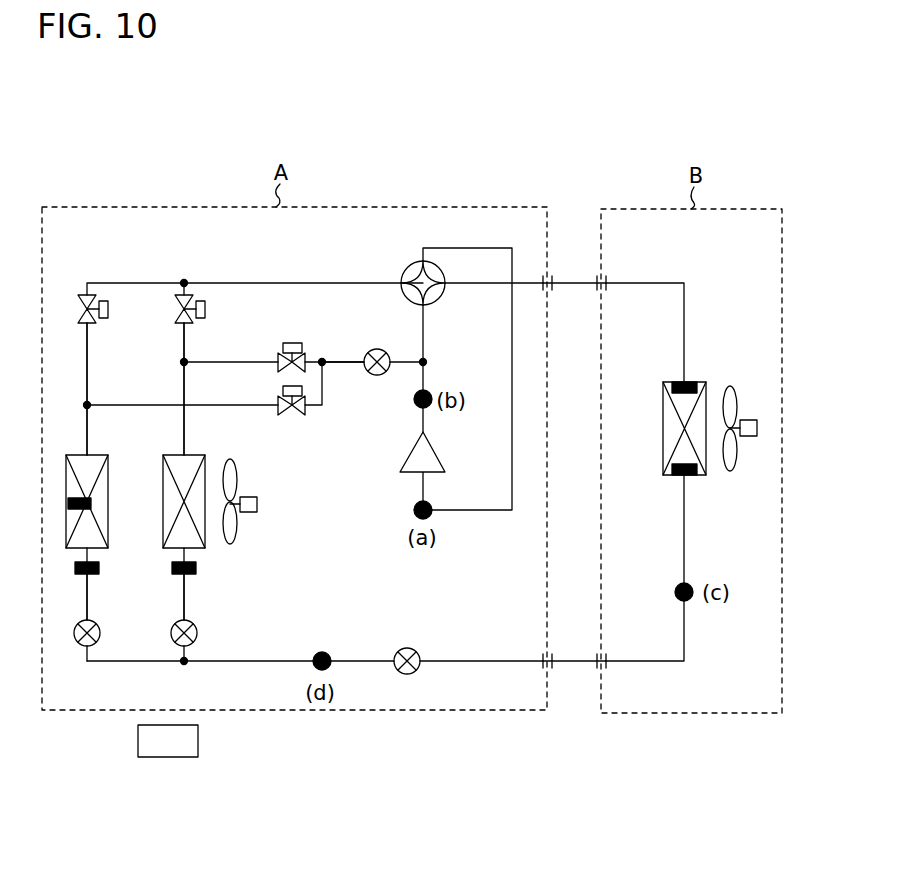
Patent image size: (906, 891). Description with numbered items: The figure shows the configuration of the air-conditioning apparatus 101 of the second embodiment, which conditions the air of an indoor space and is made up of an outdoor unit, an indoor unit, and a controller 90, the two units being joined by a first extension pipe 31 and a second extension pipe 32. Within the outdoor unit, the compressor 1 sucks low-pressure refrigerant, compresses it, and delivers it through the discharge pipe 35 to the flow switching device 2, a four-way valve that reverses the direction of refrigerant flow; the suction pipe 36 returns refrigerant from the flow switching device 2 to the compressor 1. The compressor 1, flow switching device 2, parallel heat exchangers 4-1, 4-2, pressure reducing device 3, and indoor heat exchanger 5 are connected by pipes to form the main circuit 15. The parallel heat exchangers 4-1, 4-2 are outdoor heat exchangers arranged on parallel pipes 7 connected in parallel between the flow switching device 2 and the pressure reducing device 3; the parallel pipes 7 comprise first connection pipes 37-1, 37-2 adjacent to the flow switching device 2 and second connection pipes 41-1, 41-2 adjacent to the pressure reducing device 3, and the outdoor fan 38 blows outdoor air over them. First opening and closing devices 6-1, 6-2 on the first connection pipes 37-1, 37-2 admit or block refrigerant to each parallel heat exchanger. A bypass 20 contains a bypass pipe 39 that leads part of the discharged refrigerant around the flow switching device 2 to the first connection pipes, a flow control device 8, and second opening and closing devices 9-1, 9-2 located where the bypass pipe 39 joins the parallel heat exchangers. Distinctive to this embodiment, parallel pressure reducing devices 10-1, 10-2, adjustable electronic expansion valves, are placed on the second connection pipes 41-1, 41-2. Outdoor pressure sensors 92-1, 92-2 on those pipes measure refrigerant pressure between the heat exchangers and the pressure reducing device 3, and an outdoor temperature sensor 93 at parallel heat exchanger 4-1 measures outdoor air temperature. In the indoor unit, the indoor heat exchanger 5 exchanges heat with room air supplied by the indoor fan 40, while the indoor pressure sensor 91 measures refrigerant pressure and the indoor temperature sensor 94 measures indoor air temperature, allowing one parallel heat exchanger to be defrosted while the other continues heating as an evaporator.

The compressor 1 is at (437, 455).
The flow switching device 2 is at (408, 266).
The pressure reducing device 3 is at (401, 648).
The parallel heat exchanger 4-1 is at (110, 542).
The parallel heat exchanger 4-2 is at (207, 542).
The indoor heat exchanger 5 is at (663, 424).
The first opening and closing device 6-1 is at (105, 320).
The first opening and closing device 6-2 is at (202, 320).
The parallel pipes 7 is at (267, 622).
The flow control device 8 is at (372, 350).
The second opening and closing device 9-1 is at (295, 416).
The second opening and closing device 9-2 is at (298, 343).
The parallel pressure reducing device 10-1 is at (100, 633).
The parallel pressure reducing device 10-2 is at (197, 633).
The main circuit 15 is at (326, 262).
The bypass 20 is at (351, 401).
The first extension pipe 31 is at (570, 283).
The second extension pipe 32 is at (570, 664).
The discharge pipe 35 is at (426, 334).
The suction pipe 36 is at (480, 512).
The first connection pipe 37-1 is at (89, 433).
The first connection pipe 37-2 is at (186, 433).
The outdoor fan 38 is at (258, 505).
The bypass pipe 39 is at (347, 362).
The indoor fan 40 is at (731, 472).
The second connection pipe 41-1 is at (89, 608).
The second connection pipe 41-2 is at (186, 608).
The controller 90 is at (199, 740).
The indoor pressure sensor 91 is at (694, 382).
The outdoor pressure sensor 92-1 is at (100, 572).
The outdoor pressure sensor 92-2 is at (197, 572).
The outdoor temperature sensor 93 is at (91, 503).
The indoor temperature sensor 94 is at (690, 476).
The air-conditioning apparatus 101 is at (533, 190).